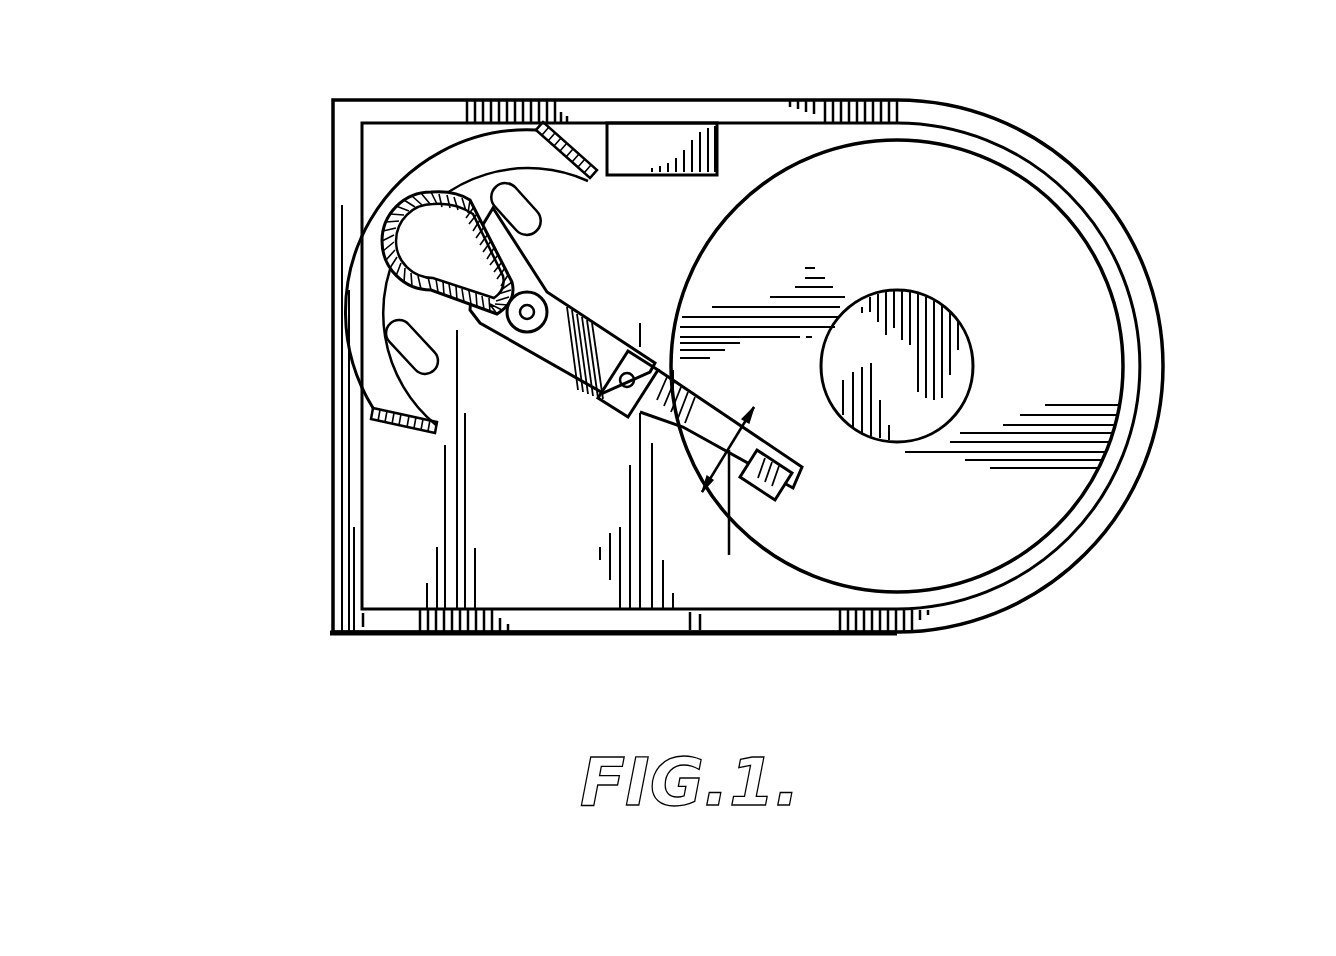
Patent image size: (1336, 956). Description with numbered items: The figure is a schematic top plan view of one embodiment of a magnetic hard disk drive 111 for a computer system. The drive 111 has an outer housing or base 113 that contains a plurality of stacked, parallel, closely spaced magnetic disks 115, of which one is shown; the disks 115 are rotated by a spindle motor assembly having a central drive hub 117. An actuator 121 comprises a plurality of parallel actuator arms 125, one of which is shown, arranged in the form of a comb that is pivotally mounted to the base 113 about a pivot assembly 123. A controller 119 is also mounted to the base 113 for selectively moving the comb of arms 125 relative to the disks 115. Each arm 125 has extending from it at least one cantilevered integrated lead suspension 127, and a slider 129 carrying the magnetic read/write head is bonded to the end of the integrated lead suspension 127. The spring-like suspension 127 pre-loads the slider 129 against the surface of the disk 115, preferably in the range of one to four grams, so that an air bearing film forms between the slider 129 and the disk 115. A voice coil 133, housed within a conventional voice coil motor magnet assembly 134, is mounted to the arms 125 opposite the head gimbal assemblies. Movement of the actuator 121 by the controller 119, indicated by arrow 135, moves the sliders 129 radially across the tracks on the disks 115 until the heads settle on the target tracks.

The hard disk drive 111 is at (1105, 112).
The base 113 is at (835, 100).
The magnetic disk 115 is at (1085, 292).
The central drive hub 117 is at (925, 296).
The controller 119 is at (645, 128).
The actuator 121 is at (556, 478).
The pivot assembly 123 is at (550, 297).
The actuator arm 125 is at (590, 317).
The integrated lead suspension 127 is at (700, 407).
The slider 129 is at (790, 480).
The voice coil 133 is at (395, 220).
The voice coil motor magnet assembly 134 is at (532, 180).
The arrow 135 is at (724, 502).